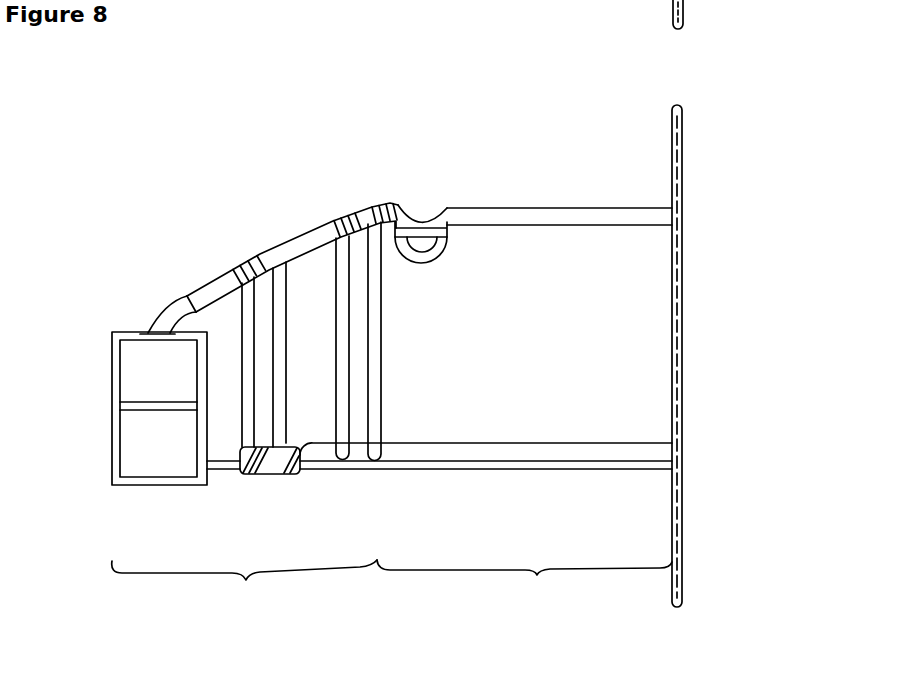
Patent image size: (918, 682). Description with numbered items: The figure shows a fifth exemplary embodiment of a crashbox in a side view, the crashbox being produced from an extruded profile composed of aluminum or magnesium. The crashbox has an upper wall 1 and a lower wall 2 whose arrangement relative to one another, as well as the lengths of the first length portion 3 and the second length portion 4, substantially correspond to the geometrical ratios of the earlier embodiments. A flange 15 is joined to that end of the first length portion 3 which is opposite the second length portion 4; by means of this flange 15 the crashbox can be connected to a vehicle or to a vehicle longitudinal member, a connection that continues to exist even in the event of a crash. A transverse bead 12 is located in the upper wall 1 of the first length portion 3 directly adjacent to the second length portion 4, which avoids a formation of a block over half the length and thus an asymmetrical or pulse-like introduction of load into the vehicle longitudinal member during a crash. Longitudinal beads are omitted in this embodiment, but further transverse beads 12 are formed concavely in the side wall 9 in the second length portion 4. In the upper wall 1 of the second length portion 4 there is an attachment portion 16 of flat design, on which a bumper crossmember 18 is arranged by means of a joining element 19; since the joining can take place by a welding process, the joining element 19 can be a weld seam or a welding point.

The upper wall 1 is at (222, 279).
The lower wall 2 is at (300, 476).
The first length portion 3 is at (524, 319).
The second length portion 4 is at (244, 315).
The side wall 9 is at (638, 302).
The transverse bead 12 is at (417, 218).
The flange 15 is at (682, 143).
The attachment portion 16 is at (135, 318).
The bumper crossmember 18 is at (88, 453).
The joining element 19 is at (151, 331).